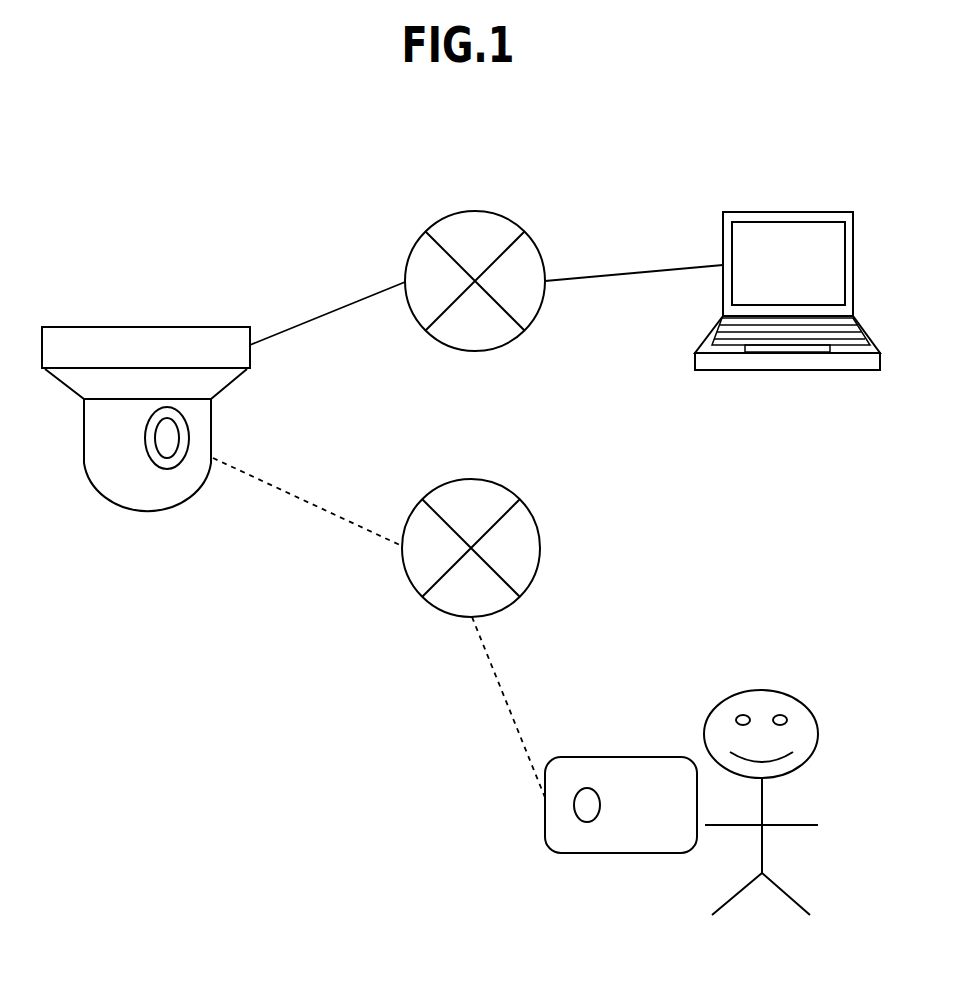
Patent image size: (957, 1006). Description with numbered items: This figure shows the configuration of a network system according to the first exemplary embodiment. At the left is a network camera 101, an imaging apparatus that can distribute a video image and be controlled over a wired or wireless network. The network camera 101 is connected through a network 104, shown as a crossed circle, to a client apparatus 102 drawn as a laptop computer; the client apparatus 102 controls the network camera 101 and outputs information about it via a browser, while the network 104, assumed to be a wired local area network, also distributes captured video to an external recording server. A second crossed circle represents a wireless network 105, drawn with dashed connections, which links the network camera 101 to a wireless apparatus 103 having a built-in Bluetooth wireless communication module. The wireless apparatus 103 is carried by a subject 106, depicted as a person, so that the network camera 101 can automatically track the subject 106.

The network camera 101 is at (147, 327).
The client apparatus 102 is at (787, 211).
The wireless apparatus 103 is at (625, 757).
The network 104 is at (475, 211).
The wireless network 105 is at (472, 478).
The subject 106 is at (762, 690).